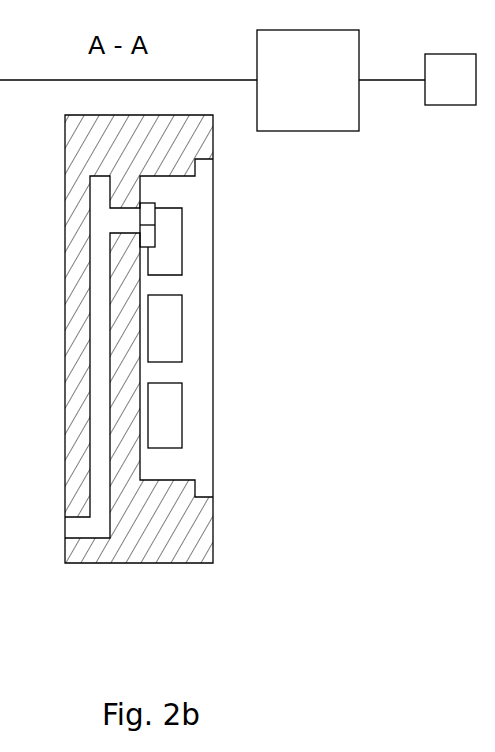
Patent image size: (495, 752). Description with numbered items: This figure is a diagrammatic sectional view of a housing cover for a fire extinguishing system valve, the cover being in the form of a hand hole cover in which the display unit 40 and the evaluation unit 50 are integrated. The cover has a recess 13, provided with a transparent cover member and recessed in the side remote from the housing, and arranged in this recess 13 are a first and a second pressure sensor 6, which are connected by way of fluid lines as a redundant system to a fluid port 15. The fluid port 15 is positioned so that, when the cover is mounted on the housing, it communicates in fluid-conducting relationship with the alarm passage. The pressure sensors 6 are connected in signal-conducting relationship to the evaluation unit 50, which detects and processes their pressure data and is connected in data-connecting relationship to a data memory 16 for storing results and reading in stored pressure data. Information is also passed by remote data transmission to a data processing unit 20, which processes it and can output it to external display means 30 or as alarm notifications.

The pressure sensor 6 is at (149, 216).
The recess 13 is at (174, 285).
The fluid port 15 is at (77, 532).
The data memory 16 is at (164, 328).
The data processing unit 20 is at (308, 80).
The external display means 30 is at (450, 79).
The display unit 40 is at (164, 411).
The evaluation unit 50 is at (169, 227).